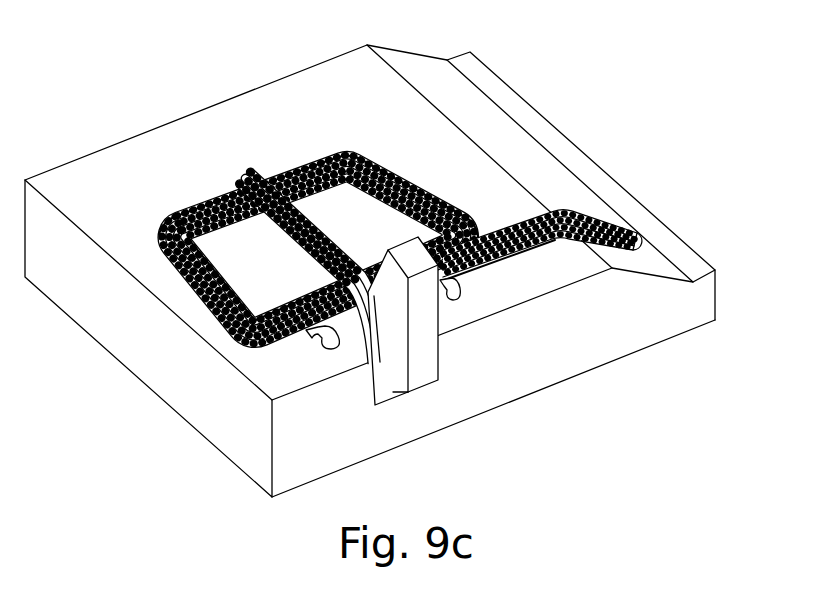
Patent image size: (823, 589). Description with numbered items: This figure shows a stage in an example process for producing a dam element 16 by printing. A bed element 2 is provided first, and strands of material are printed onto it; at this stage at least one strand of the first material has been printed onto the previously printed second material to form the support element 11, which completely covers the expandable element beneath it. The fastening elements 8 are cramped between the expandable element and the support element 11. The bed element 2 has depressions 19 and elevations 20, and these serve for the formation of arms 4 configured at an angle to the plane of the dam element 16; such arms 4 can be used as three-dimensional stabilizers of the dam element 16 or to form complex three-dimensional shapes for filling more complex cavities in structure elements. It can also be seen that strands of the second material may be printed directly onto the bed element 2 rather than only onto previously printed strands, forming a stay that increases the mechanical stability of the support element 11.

The bed element 2 is at (117, 167).
The arms 4 is at (619, 220).
The fastening elements 8 is at (312, 332).
The support element 11 is at (447, 228).
The dam element 16 is at (421, 189).
The depressions 19 is at (638, 262).
The elevations 20 is at (427, 340).